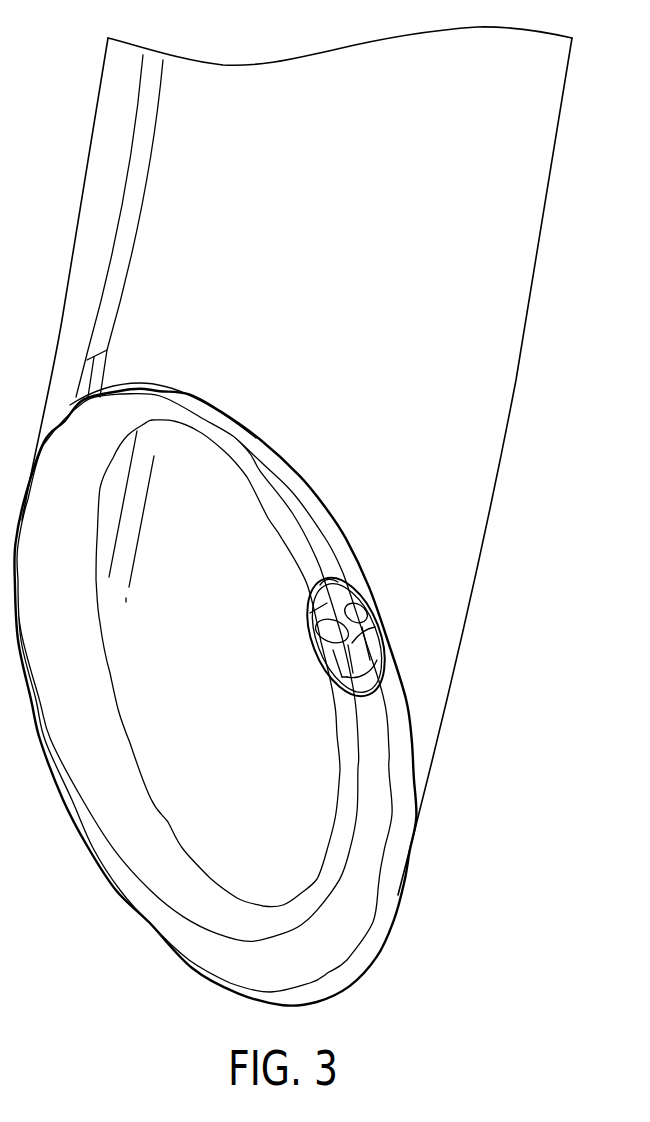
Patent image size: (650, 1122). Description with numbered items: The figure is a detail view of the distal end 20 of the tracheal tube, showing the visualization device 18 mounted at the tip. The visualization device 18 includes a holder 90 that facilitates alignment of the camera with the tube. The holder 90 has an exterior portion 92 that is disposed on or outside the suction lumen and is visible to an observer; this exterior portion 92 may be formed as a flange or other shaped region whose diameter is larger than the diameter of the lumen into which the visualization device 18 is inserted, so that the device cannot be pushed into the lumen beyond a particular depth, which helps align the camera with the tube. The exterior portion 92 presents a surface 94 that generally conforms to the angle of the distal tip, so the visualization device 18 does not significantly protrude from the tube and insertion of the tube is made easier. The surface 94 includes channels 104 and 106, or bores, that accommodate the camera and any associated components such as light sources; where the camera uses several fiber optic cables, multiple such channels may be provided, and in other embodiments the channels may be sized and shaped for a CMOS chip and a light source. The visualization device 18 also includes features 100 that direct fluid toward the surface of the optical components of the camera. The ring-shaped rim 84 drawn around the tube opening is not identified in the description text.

The visualization device 18 is at (382, 630).
The distal end 20 is at (505, 438).
The ring flange 84 is at (133, 919).
The holder 90 is at (378, 690).
The exterior portion 92 is at (320, 582).
The surface 94 is at (328, 602).
The features 100 is at (348, 647).
The channel 104 is at (332, 640).
The channel 106 is at (362, 593).